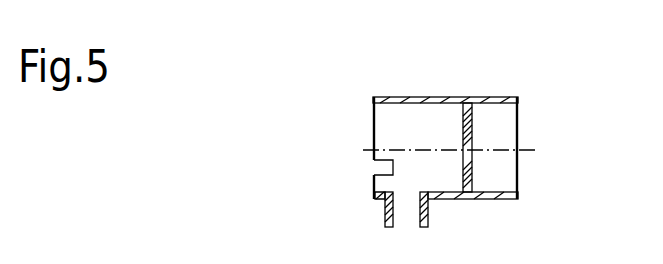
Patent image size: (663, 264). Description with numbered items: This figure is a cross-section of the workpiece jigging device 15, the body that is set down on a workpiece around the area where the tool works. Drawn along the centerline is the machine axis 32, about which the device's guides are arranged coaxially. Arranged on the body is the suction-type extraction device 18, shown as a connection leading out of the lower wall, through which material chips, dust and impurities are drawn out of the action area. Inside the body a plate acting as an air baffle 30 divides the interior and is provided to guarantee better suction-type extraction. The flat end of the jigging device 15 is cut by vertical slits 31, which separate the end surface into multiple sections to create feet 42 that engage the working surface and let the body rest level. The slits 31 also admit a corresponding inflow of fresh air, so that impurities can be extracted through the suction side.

The workpiece jigging device 15 is at (440, 98).
The suction-type extraction device 18 is at (385, 220).
The air baffle 30 is at (472, 127).
The vertical slits 31 is at (366, 167).
The machine axis 32 is at (527, 152).
The feet 42 is at (358, 101).